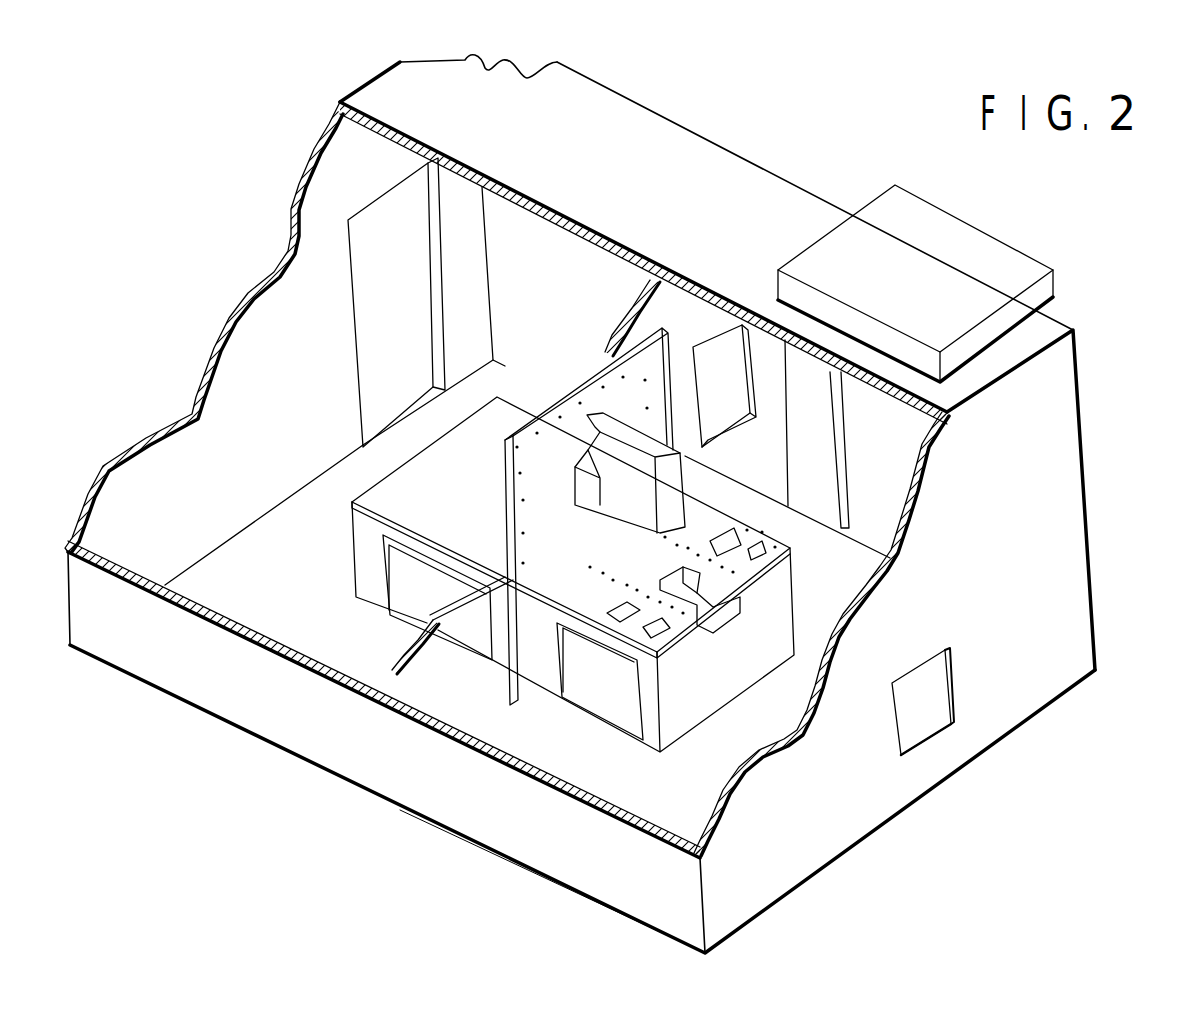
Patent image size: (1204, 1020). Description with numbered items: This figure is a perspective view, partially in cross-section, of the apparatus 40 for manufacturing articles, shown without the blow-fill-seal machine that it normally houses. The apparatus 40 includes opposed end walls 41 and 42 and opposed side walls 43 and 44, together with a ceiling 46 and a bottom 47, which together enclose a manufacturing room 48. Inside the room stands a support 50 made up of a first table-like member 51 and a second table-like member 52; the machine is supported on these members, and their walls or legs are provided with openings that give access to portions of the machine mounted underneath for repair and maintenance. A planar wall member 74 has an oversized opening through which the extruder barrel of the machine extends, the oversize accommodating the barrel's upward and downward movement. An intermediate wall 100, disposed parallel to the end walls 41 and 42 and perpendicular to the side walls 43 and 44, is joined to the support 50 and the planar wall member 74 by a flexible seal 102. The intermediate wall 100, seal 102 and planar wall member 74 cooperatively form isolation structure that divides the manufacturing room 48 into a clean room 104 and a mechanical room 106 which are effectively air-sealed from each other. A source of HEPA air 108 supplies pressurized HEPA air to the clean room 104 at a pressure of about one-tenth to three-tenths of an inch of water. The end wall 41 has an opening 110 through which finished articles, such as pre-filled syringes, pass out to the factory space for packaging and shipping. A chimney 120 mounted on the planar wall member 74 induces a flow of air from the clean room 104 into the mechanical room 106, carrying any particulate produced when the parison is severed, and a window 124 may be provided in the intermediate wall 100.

The apparatus 40 is at (806, 168).
The end wall 41 is at (1057, 505).
The end wall 42 is at (310, 295).
The side wall 43 is at (560, 313).
The side wall 44 is at (270, 688).
The ceiling 46 is at (587, 140).
The bottom 47 is at (316, 573).
The manufacturing room 48 is at (326, 470).
The support 50 is at (328, 516).
The first table-like member 51 is at (645, 745).
The second table-like member 52 is at (355, 578).
The planar wall member 74 is at (523, 432).
The intermediate wall 100 is at (620, 350).
The seal 102 is at (633, 353).
The clean room 104 is at (718, 750).
The mechanical room 106 is at (232, 572).
The source of HEPA air 108 is at (915, 238).
The opening 110 is at (920, 712).
The chimney 120 is at (658, 453).
The window 124 is at (722, 365).